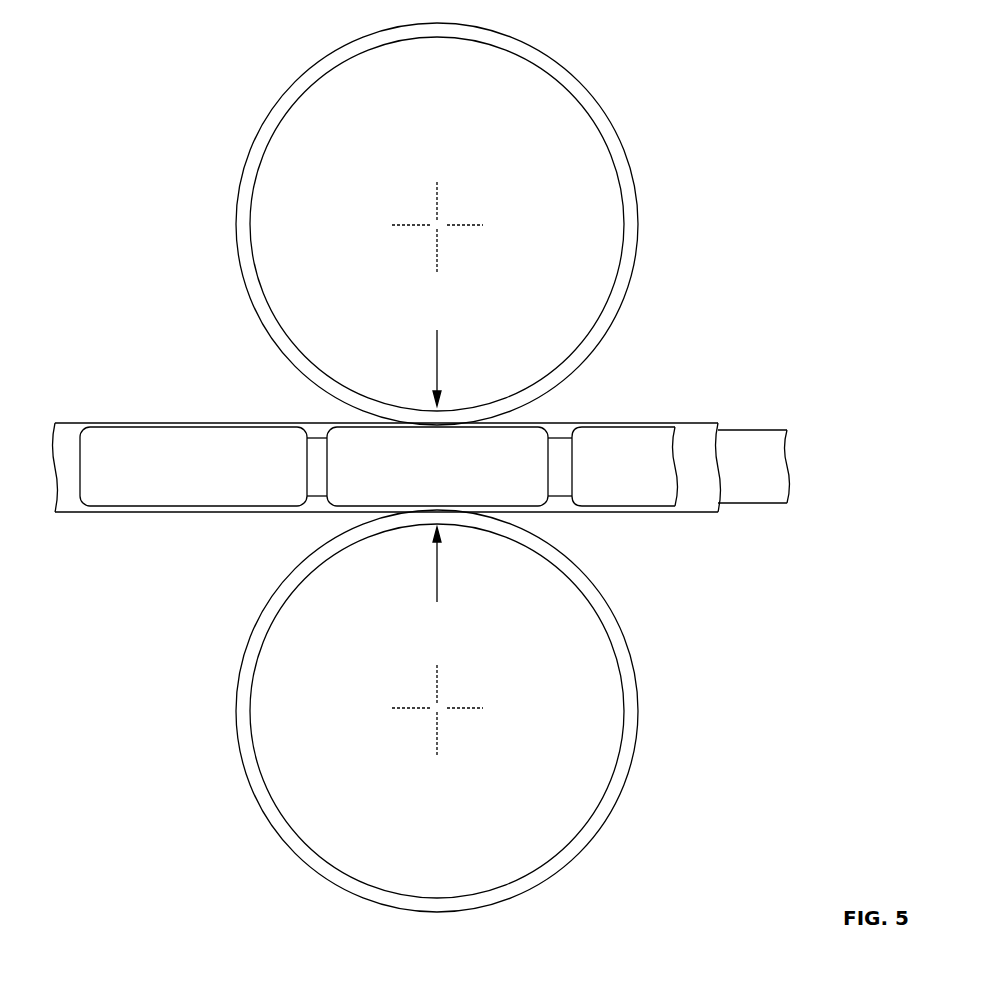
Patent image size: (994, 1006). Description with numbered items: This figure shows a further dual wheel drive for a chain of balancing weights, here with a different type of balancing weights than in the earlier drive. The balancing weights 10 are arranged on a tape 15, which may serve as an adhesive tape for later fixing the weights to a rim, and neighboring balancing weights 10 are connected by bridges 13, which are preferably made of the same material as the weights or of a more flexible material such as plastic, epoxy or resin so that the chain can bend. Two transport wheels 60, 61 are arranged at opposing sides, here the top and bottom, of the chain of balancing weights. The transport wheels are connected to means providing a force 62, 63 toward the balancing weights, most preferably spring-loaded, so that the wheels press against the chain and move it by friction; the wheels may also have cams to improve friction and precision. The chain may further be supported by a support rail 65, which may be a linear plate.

The balancing weights 10 is at (193, 460).
The bridges 13 is at (316, 448).
The tape 15 is at (74, 438).
The wheel 60 is at (588, 236).
The wheel 61 is at (588, 721).
The force 62 is at (440, 358).
The force 63 is at (440, 575).
The support rail 65 is at (754, 448).